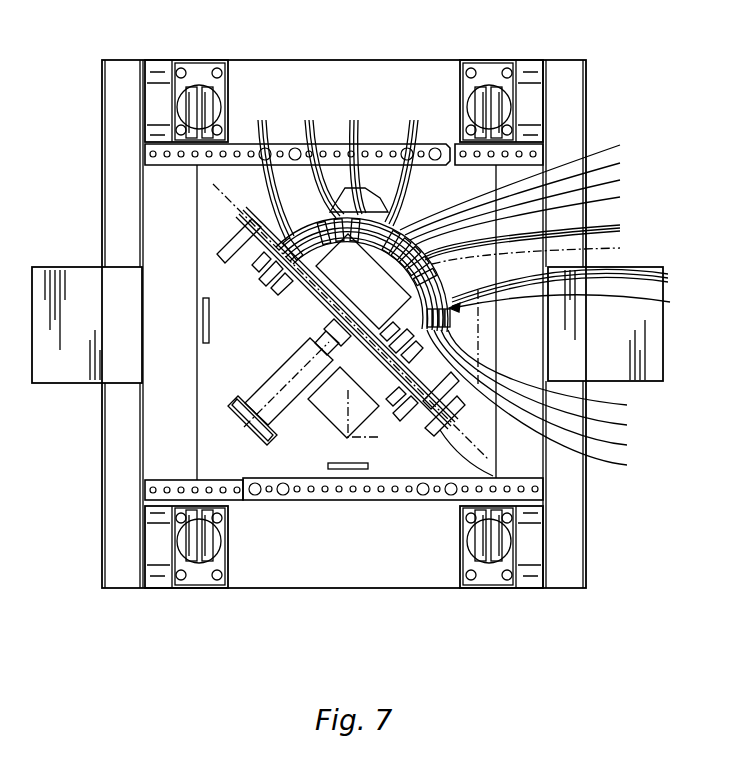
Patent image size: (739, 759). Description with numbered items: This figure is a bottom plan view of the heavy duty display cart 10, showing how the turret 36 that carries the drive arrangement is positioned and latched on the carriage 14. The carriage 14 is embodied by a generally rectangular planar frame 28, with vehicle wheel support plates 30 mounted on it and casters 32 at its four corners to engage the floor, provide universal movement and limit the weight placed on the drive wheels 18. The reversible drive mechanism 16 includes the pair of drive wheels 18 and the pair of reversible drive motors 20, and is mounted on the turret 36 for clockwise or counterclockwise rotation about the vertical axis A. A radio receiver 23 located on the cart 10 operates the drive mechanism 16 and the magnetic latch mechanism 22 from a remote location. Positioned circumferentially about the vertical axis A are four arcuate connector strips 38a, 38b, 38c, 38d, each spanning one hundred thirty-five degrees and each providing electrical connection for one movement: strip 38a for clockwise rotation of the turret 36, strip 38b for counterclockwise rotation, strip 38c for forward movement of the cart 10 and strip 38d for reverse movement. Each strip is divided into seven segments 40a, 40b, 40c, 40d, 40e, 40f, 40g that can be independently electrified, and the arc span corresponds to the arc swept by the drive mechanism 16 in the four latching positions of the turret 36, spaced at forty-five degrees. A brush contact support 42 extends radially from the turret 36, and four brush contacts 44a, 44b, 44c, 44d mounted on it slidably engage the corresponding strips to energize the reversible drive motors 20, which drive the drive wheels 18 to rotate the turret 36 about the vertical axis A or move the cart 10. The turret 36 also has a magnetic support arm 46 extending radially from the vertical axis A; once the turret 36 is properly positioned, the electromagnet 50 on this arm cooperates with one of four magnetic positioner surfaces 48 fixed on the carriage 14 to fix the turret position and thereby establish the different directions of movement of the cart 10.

The display cart 10 is at (603, 52).
The carriage 14 is at (420, 250).
The reversible drive mechanism 16 is at (274, 219).
The drive wheels 18 is at (222, 257).
The reversible drive motors 20 is at (313, 217).
The magnetic latch mechanism 22 is at (271, 440).
The radio receiver 23 is at (383, 220).
The frame 28 is at (148, 152).
The vehicle wheel support plates 30 is at (72, 268).
The casters 32 is at (197, 83).
The turret 36 is at (350, 190).
The arcuate connector strip 38a is at (554, 362).
The arcuate connector strip 38b is at (551, 372).
The arcuate connector strip 38c is at (548, 382).
The arcuate connector strip 38d is at (545, 392).
The segment 40a is at (268, 168).
The segment 40b is at (318, 157).
The segment 40c is at (356, 155).
The segment 40d is at (408, 161).
The segment 40e is at (543, 238).
The segment 40f is at (579, 286).
The segment 40g is at (579, 306).
The brush contact support 42 is at (541, 311).
The brush contact 44a is at (531, 182).
The brush contact 44b is at (533, 193).
The brush contact 44c is at (535, 204).
The brush contact 44d is at (538, 215).
The magnetic support arm 46 is at (330, 343).
The magnetic positioner surfaces 48 is at (203, 328).
The electromagnet 50 is at (283, 440).
The vertical axis A is at (242, 363).